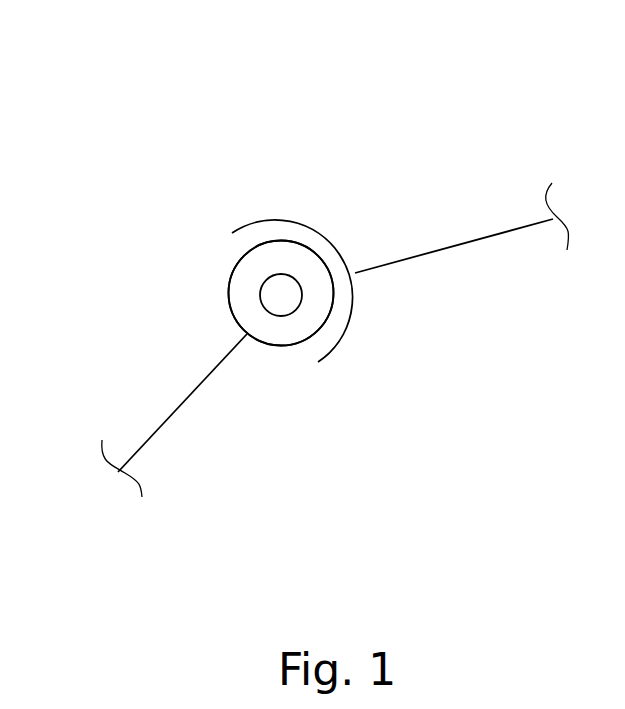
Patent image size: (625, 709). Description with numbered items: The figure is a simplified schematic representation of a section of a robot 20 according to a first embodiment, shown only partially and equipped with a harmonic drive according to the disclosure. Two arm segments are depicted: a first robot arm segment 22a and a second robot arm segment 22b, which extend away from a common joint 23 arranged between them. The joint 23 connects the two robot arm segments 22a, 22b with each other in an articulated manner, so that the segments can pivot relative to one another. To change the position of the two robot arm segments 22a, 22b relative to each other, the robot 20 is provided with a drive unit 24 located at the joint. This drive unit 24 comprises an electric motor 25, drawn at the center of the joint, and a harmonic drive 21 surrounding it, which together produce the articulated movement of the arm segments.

The robot 20 is at (143, 152).
The harmonic drive 21 is at (250, 321).
The first robot arm segment 22a is at (145, 443).
The second robot arm segment 22b is at (527, 222).
The joint 23 is at (329, 218).
The drive unit 24 is at (303, 402).
The electric motor 25 is at (277, 296).